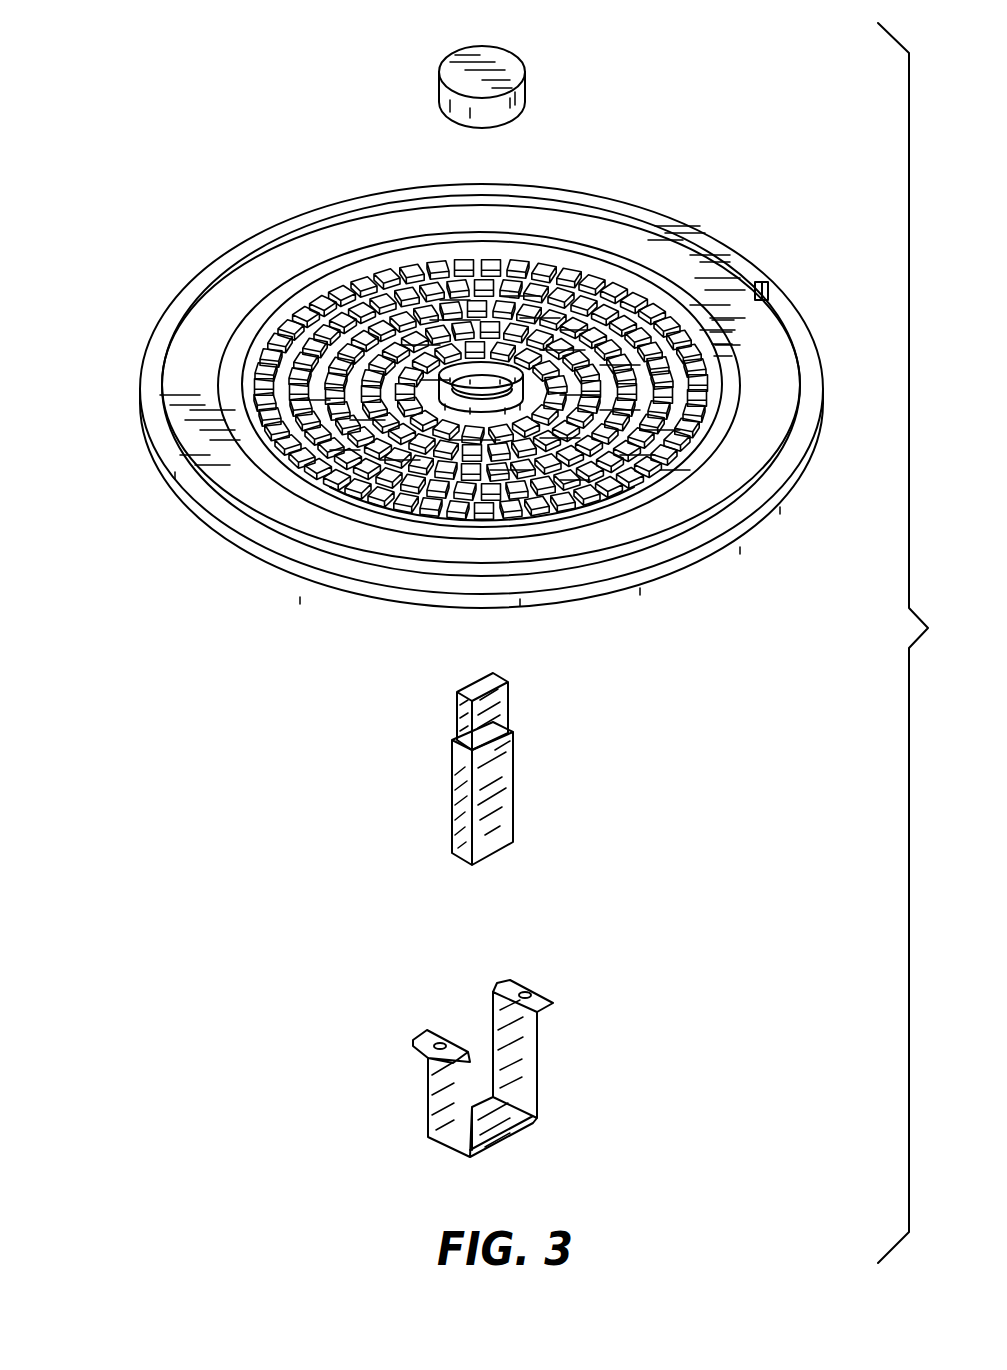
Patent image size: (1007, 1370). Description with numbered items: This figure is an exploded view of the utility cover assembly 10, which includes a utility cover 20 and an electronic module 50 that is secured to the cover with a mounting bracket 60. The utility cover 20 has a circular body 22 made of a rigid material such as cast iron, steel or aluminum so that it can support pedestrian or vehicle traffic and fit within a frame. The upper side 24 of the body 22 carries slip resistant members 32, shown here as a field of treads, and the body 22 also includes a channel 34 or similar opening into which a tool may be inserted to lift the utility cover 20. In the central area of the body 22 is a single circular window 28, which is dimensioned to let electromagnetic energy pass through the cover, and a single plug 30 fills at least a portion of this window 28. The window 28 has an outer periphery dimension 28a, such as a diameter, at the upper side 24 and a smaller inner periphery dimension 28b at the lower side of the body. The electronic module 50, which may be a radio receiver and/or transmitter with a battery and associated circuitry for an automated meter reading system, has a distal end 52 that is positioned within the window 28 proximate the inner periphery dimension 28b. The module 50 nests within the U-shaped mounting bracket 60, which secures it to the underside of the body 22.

The utility cover assembly 10 is at (93, 150).
The utility cover 20 is at (178, 510).
The body 22 is at (647, 208).
The upper side 24 is at (217, 313).
The window 28 is at (527, 402).
The outer periphery dimension 28a is at (455, 368).
The inner periphery dimension 28b is at (455, 405).
The plug 30 is at (520, 82).
The slip resistant members 32 is at (700, 428).
The channel 34 is at (778, 287).
The electronic module 50 is at (518, 778).
The distal end 52 is at (457, 718).
The mounting bracket 60 is at (538, 1055).